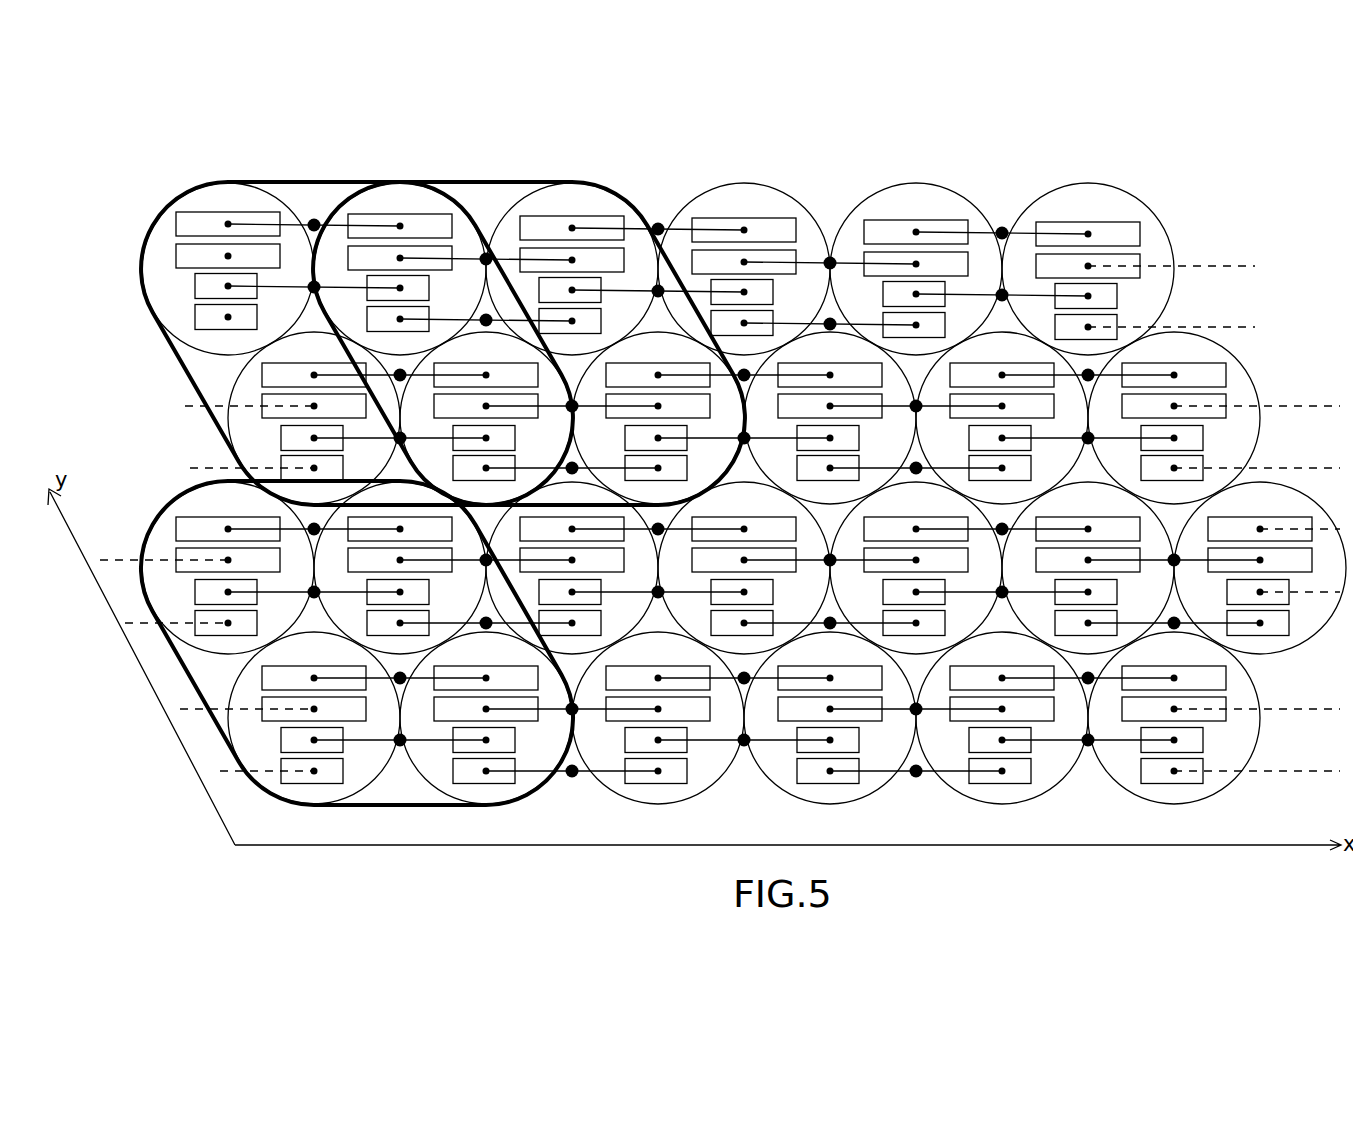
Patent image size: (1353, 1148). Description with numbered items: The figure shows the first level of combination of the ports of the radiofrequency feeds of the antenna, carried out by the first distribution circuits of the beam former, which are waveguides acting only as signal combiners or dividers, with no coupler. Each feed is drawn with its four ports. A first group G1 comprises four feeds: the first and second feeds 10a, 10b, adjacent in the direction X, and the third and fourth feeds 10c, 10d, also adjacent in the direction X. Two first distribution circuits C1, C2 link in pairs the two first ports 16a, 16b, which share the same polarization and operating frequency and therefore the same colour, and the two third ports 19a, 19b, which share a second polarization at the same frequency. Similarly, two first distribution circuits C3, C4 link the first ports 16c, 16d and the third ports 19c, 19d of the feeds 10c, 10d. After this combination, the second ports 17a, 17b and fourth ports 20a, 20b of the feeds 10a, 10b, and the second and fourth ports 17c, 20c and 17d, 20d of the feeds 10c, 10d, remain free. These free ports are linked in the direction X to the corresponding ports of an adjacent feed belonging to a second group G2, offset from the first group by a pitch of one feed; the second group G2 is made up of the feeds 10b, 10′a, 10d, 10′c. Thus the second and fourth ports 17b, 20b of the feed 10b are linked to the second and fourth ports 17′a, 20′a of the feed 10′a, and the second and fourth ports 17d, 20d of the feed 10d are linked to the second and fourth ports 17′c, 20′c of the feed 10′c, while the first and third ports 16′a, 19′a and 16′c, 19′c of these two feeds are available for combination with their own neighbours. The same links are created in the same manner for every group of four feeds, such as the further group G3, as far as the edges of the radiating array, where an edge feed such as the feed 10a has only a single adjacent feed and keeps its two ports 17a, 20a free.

The radiofrequency feed 10a is at (228, 226).
The radiofrequency feed 10b is at (400, 224).
The radiofrequency feed 10c is at (259, 418).
The radiofrequency feed 10d is at (354, 418).
The radiofrequency feed 10′a is at (572, 226).
The radiofrequency feed 10′c is at (658, 311).
The first port 16a is at (228, 224).
The first port 16b is at (400, 226).
The first port 16c is at (314, 375).
The first port 16d is at (486, 375).
The photoelectric conversion portion 16′a is at (572, 228).
The photoelectric conversion portion 16′c is at (658, 375).
The second port 17a is at (228, 256).
The second port 17b is at (400, 258).
The photoelectric conversion portion 17c is at (314, 406).
The second port 17d is at (486, 406).
The second port 17′a is at (572, 260).
The second port 17′c is at (658, 406).
The third port 19a is at (225, 286).
The third port 19b is at (404, 288).
The third port 19c is at (312, 438).
The third port 19d is at (489, 438).
The photoelectric conversion portion 19′a is at (565, 290).
The photoelectric conversion portion 19′c is at (655, 438).
The fourth port 20a is at (225, 317).
The fourth port 20b is at (397, 319).
The photoelectric conversion portion 20c is at (312, 468).
The fourth port 20d is at (482, 468).
The fourth port 20′a is at (576, 321).
The fourth port 20′c is at (662, 468).
The first distribution circuit C1 is at (312, 221).
The first distribution circuit C2 is at (311, 293).
The first distribution circuit C3 is at (403, 381).
The first distribution circuit C4 is at (397, 445).
The first group of four feeds G1 is at (317, 182).
The second group of four feeds G2 is at (493, 180).
The pixel group G3 is at (402, 807).